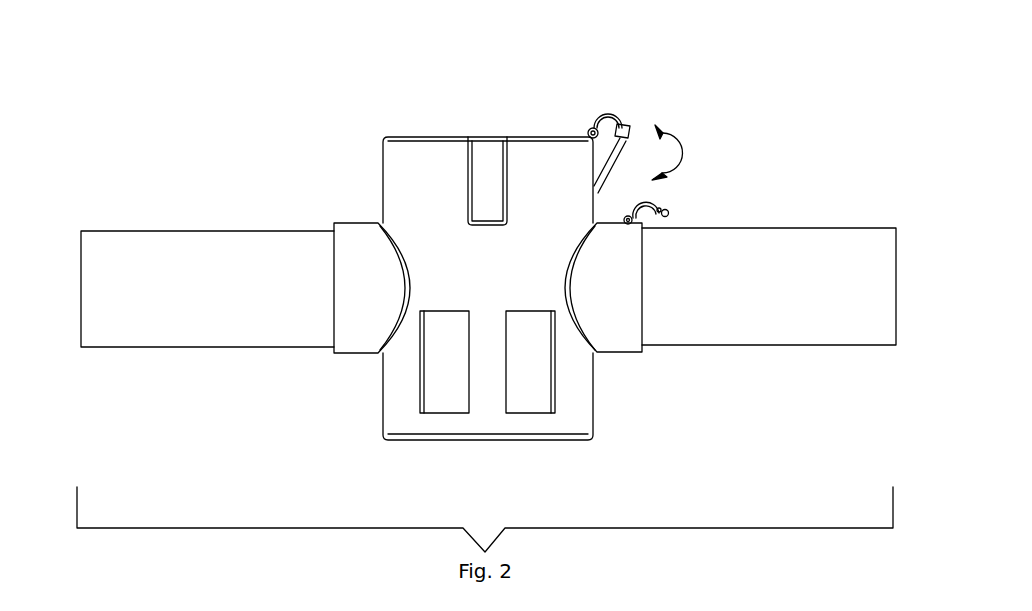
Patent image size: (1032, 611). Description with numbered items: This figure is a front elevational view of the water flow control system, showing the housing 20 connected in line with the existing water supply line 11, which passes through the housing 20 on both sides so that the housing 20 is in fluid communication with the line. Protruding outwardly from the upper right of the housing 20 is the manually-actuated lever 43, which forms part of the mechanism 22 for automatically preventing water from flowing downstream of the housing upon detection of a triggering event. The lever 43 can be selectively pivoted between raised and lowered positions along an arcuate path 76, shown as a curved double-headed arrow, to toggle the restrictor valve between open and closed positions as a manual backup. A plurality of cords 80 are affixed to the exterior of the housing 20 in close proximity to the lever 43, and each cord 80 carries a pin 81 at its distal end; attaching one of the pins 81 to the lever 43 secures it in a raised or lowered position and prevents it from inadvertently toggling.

The existing water supply line 11 is at (777, 257).
The housing 20 is at (393, 182).
The mechanism for automatically preventing water from flowing 22 is at (560, 123).
The manually-actuated lever 43 is at (636, 134).
The arcuate path 76 is at (673, 151).
The cords 80 is at (612, 112).
The pin 81 is at (613, 155).